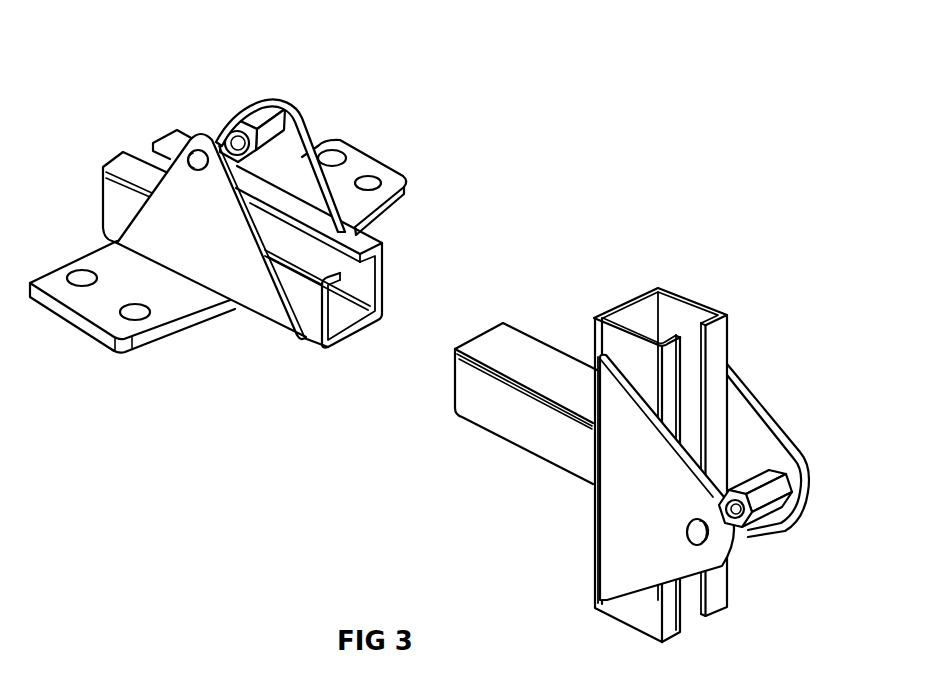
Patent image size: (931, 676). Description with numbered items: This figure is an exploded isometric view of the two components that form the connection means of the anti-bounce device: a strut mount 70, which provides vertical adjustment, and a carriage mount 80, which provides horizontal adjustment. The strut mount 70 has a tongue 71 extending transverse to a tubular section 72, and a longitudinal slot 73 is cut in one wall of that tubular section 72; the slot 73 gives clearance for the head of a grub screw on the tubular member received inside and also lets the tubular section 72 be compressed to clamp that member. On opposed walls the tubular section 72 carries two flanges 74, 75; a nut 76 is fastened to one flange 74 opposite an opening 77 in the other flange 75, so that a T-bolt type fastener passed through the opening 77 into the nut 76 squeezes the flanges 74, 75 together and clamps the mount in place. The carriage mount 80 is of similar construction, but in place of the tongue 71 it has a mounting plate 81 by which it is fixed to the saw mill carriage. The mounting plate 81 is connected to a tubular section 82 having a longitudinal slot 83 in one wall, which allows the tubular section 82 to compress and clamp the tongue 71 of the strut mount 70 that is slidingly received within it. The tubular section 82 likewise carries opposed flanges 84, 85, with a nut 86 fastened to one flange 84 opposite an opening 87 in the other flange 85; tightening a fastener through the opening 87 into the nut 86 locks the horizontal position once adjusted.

The strut mount 70 is at (635, 408).
The tongue 71 is at (507, 417).
The tubular section 72 is at (698, 439).
The longitudinal slot 73 is at (690, 357).
The flange 74 is at (743, 423).
The flange 75 is at (669, 480).
The nut 76 is at (765, 487).
The opening 77 is at (708, 532).
The carriage mount 80 is at (294, 206).
The mounting plate 81 is at (170, 318).
The tubular section 82 is at (354, 281).
The longitudinal slot 83 is at (345, 263).
The flange 84 is at (290, 162).
The flange 85 is at (166, 178).
The nut 86 is at (272, 131).
The opening 87 is at (200, 150).